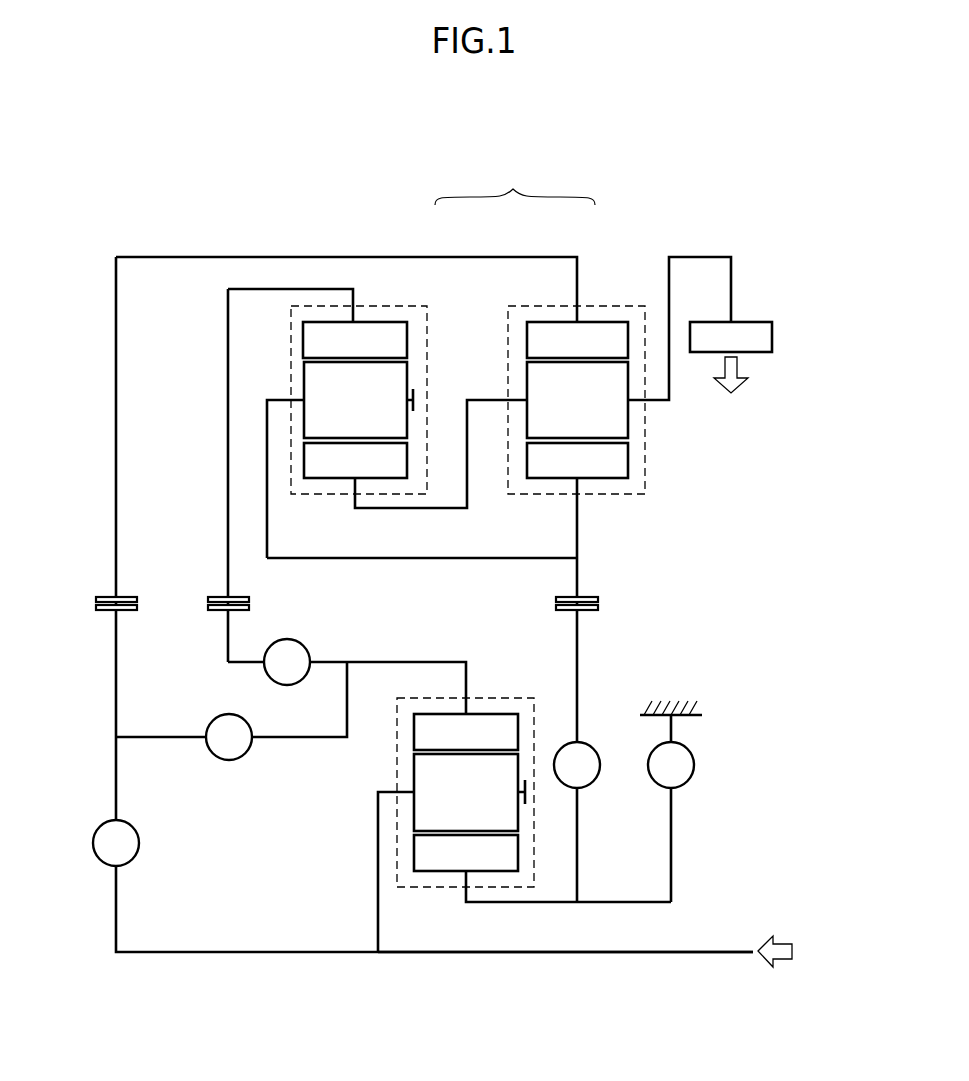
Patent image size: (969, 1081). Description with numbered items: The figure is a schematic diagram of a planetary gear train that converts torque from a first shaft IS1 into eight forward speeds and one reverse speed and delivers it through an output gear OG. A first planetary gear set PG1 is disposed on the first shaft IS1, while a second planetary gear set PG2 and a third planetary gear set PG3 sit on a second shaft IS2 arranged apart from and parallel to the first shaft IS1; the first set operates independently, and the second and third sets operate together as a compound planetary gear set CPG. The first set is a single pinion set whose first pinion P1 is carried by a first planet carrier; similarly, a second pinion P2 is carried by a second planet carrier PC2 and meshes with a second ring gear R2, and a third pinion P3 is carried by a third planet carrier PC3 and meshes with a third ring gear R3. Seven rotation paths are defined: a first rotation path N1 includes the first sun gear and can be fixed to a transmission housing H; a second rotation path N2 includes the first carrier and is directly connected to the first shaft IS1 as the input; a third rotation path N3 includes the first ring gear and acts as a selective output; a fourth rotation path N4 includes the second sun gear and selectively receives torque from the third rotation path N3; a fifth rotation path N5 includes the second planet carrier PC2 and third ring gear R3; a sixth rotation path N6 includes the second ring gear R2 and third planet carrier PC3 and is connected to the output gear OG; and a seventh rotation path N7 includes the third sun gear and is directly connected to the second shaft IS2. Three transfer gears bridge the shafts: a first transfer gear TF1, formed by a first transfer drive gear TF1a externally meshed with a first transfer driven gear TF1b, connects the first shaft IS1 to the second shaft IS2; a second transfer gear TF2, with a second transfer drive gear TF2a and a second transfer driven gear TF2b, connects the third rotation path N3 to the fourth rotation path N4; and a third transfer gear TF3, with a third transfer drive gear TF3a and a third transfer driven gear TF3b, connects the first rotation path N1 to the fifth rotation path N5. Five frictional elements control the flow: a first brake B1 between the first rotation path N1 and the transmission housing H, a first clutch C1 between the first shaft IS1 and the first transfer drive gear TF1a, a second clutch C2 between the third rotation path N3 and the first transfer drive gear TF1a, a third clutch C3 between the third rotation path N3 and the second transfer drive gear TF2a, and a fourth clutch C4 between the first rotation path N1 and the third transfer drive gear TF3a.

The second shaft IS2 is at (377, 257).
The first shaft IS1 is at (595, 953).
The compound planetary gear set CPG is at (515, 184).
The first planetary gear set PG1 is at (432, 894).
The second planetary gear set PG2 is at (404, 300).
The third planetary gear set PG3 is at (611, 300).
The second planet carrier PC2 is at (273, 398).
The third planet carrier PC3 is at (658, 401).
The first rotation path N1 is at (542, 868).
The second rotation path N2 is at (381, 790).
The third rotation path N3 is at (466, 732).
The fourth rotation path N4 is at (317, 323).
The fifth rotation path N5 is at (451, 559).
The sixth rotation path N6 is at (469, 495).
The seventh rotation path N7 is at (577, 340).
The first pinion P1 is at (469, 792).
The second pinion P2 is at (358, 400).
The third pinion P3 is at (577, 400).
The second ring gear R2 is at (355, 460).
The third ring gear R3 is at (577, 460).
The output gear OG is at (731, 372).
The first transfer gear TF1 is at (159, 567).
The first transfer drive gear TF1a is at (152, 588).
The first transfer driven gear TF1b is at (125, 595).
The second transfer gear TF2 is at (286, 604).
The second transfer drive gear TF2a is at (243, 610).
The second transfer driven gear TF2b is at (243, 598).
The third transfer gear TF3 is at (634, 604).
The third transfer drive gear TF3a is at (594, 610).
The third transfer driven gear TF3b is at (594, 598).
The first clutch C1 is at (116, 843).
The second clutch C2 is at (229, 737).
The third clutch C3 is at (347, 676).
The fourth clutch C4 is at (577, 765).
The first brake B1 is at (671, 765).
The transmission housing H is at (678, 700).